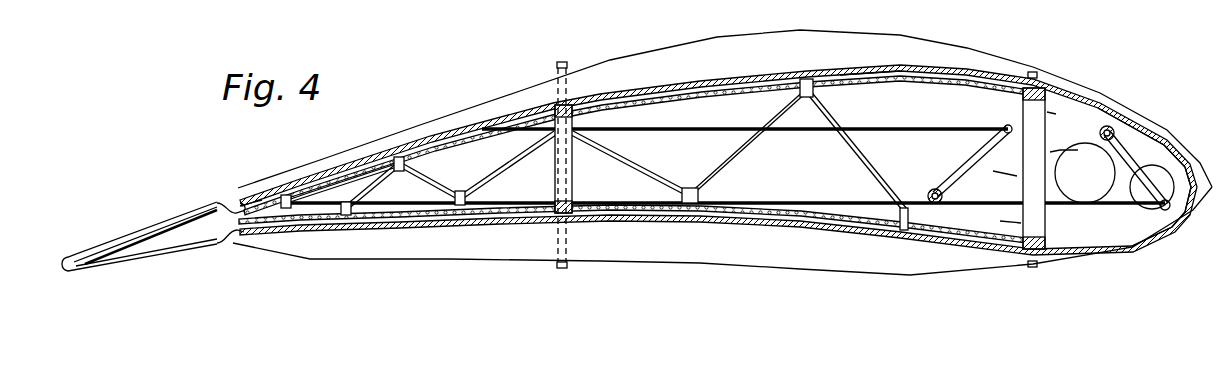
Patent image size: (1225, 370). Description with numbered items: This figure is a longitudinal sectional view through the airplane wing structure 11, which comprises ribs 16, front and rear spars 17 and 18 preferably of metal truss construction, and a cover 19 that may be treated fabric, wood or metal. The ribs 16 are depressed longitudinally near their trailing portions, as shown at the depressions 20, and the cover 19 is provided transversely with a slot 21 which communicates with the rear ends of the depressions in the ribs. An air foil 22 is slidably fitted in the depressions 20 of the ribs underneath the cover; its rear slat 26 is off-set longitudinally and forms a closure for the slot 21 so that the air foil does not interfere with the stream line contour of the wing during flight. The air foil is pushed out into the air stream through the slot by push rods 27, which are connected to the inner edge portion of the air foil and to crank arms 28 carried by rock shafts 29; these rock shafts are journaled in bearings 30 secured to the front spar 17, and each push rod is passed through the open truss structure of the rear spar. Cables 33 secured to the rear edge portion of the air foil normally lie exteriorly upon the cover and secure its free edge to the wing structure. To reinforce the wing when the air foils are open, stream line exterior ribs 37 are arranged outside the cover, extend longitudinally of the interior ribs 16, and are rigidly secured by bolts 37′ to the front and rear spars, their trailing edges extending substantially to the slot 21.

The airplane wing structure 11 is at (782, 226).
The ribs 16 is at (885, 88).
The front spar 17 is at (1045, 228).
The rear spar 18 is at (558, 172).
The cover 19 is at (1145, 248).
The depressions 20 is at (452, 160).
The slot 21 is at (215, 205).
The air foil 22 is at (353, 157).
The rear slat 26 is at (222, 200).
The push rods 27 is at (763, 203).
The crank arms 28 is at (958, 167).
The rock shafts 29 is at (1110, 126).
The bearings 30 is at (1072, 128).
The cables 33 is at (250, 200).
The exterior ribs 37 is at (640, 58).
The bolts 37′ is at (560, 62).